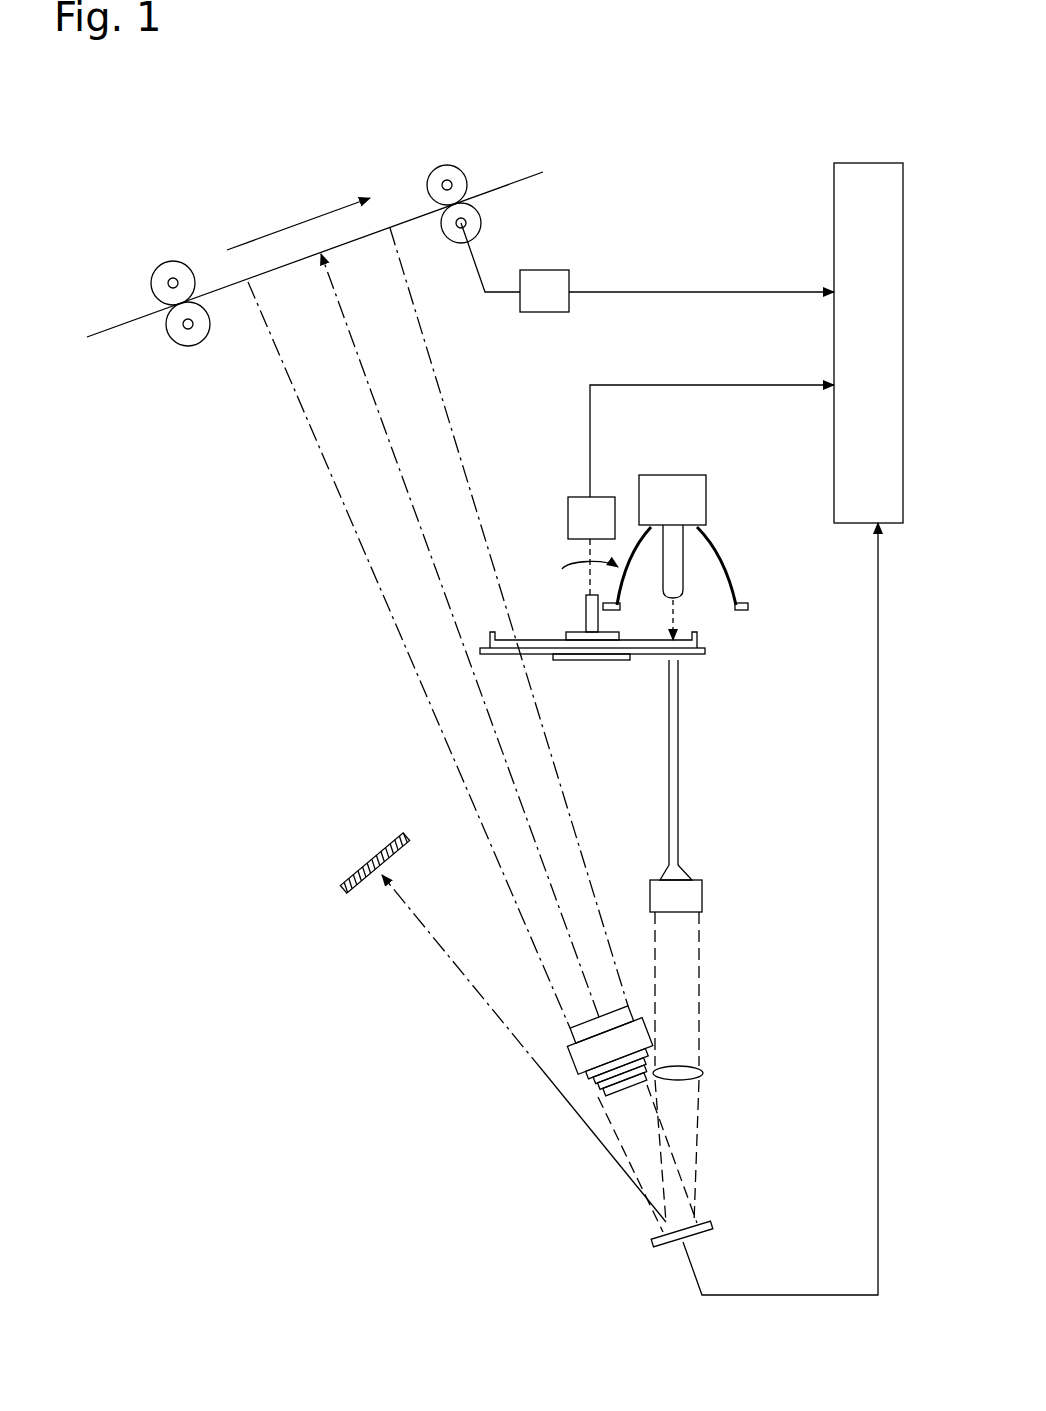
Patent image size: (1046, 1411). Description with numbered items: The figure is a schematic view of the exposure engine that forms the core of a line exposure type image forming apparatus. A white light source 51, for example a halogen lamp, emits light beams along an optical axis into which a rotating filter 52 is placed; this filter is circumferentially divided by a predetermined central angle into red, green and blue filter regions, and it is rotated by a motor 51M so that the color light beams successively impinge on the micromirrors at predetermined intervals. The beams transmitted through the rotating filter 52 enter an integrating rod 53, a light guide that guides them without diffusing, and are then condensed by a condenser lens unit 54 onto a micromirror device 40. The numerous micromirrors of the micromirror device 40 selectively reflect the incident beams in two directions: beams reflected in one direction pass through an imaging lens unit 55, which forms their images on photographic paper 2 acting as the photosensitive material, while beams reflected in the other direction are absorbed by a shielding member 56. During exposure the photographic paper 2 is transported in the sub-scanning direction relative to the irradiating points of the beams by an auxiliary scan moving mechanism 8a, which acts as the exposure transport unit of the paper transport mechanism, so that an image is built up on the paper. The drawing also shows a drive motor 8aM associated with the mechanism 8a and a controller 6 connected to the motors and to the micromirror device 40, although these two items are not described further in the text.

The photographic paper 2 is at (127, 324).
The auxiliary scan moving mechanism 8a is at (468, 170).
The feed roller motor 8aM is at (569, 270).
The controller 6 is at (863, 163).
The motor 51M is at (568, 512).
The white light source 51 is at (742, 556).
The rotating filter 52 is at (712, 651).
The integrating rod 53 is at (680, 758).
The condenser lens unit 54 is at (739, 916).
The imaging lens unit 55 is at (577, 1058).
The shielding member 56 is at (373, 858).
The micromirror device 40 is at (668, 1249).